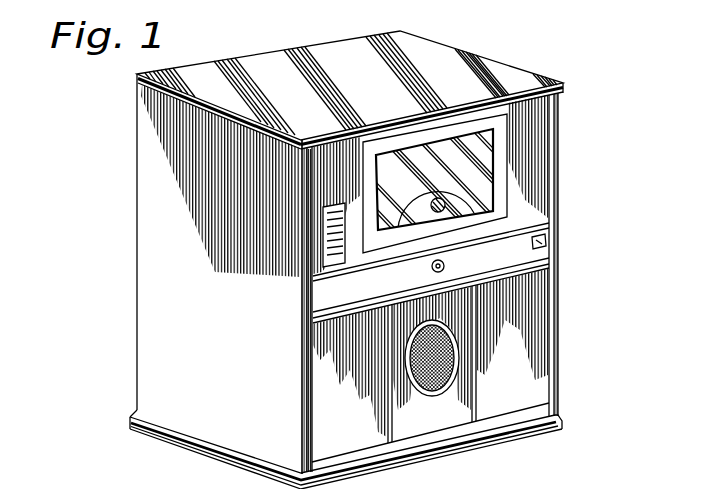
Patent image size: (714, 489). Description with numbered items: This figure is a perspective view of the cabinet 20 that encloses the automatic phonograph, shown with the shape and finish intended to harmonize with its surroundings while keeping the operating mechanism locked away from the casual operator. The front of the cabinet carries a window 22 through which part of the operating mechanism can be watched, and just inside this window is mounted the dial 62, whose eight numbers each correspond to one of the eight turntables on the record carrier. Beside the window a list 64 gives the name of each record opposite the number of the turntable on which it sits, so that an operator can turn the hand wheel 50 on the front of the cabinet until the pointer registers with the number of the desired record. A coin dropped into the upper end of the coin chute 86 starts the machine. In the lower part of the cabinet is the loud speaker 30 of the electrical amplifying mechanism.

The cabinet 20 is at (140, 243).
The window 22 is at (483, 177).
The dial 62 is at (447, 199).
The hand wheel 50 is at (444, 261).
The coin chute 86 is at (546, 239).
The list 64 is at (328, 251).
The loud speaker 30 is at (413, 358).